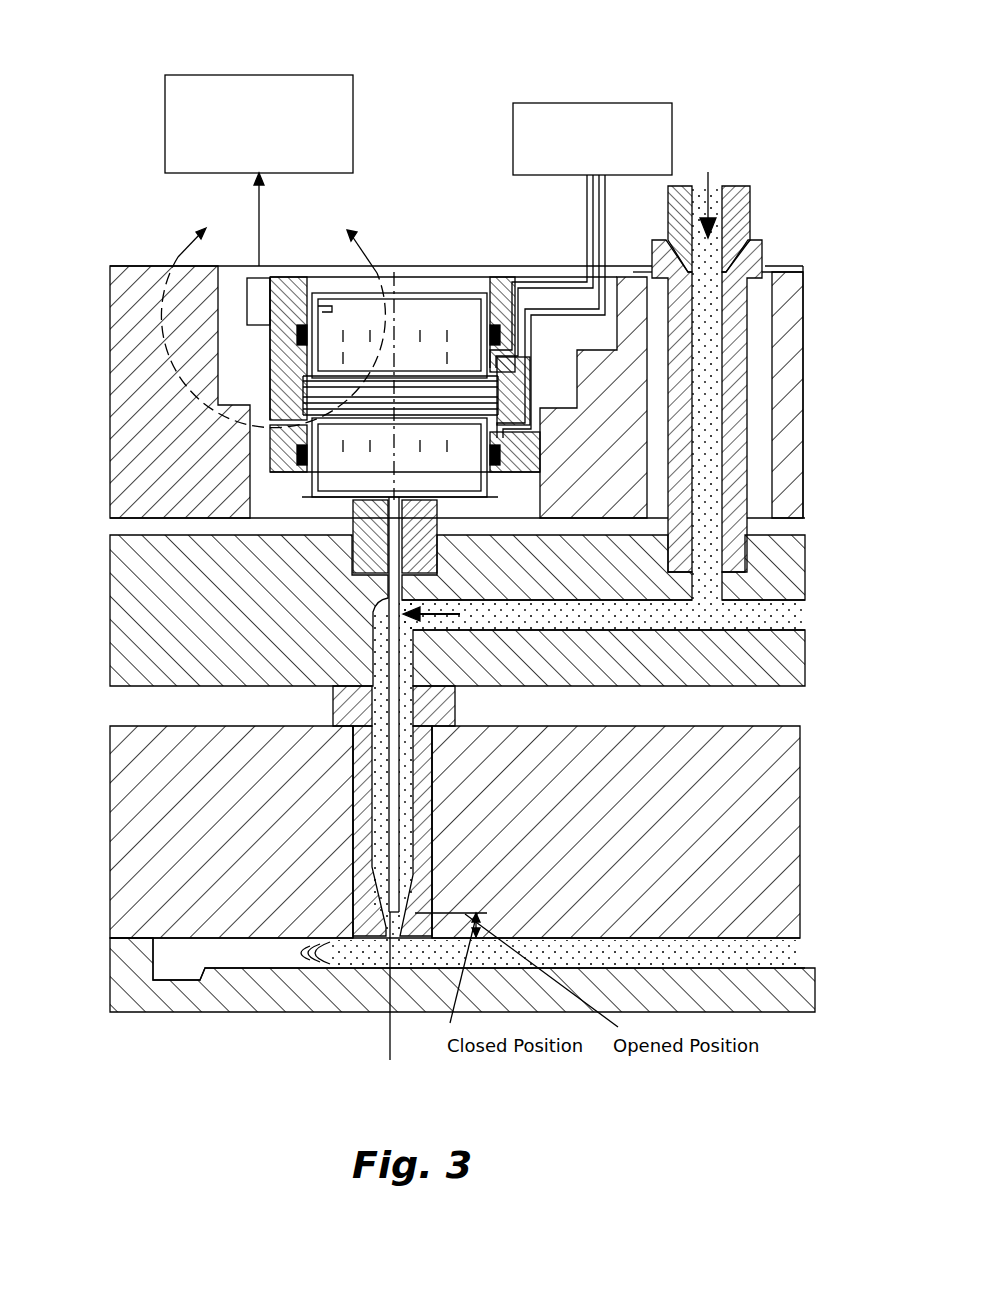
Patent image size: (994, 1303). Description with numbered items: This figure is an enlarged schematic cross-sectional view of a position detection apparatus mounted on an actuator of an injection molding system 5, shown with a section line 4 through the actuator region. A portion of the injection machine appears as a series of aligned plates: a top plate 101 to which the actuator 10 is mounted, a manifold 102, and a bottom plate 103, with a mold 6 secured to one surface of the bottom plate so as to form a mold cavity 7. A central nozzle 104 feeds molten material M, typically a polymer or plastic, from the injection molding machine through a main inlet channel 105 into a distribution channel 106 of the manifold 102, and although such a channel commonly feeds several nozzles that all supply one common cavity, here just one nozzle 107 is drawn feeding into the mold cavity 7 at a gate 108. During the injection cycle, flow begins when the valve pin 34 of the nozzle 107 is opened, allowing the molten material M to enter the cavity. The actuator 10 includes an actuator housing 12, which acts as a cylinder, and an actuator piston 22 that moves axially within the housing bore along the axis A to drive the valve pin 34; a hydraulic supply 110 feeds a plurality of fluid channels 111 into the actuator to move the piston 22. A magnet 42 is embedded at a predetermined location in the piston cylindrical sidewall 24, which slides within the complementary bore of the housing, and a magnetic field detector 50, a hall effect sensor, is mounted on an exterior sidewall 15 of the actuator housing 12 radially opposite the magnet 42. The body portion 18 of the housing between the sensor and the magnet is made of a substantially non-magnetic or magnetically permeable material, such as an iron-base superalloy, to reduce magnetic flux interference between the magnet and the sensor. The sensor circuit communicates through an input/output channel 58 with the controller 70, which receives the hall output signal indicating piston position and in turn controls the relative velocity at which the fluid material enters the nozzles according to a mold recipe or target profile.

The injection molding system 5 is at (696, 52).
The section line 4- 4 is at (273, 318).
The mold 6 is at (108, 968).
The mold cavity 7 is at (194, 966).
The actuator 10 is at (448, 262).
The actuator housing 12 is at (507, 275).
The exterior sidewall 15 is at (268, 351).
The body portion 18 is at (289, 276).
The actuator piston 22 is at (407, 290).
The piston cylindrical sidewall 24 is at (428, 364).
The valve pin 34 is at (402, 767).
The magnet 42 is at (323, 290).
The magnetic field detector 50 is at (252, 280).
The input/output channel 58 is at (264, 214).
The controller 70 is at (248, 151).
The top plate 101 is at (108, 352).
The manifold 102 is at (108, 599).
The bottom plate 103 is at (108, 852).
The central nozzle 104 is at (750, 214).
The main inlet channel 105 is at (725, 393).
The distribution channel 106 is at (562, 636).
The nozzle 107 is at (350, 770).
The gate 108 is at (402, 938).
The hydraulic supply 110 is at (612, 104).
The fluid channels 111 is at (609, 204).
The axis A is at (388, 1044).
The molten material M is at (721, 194).